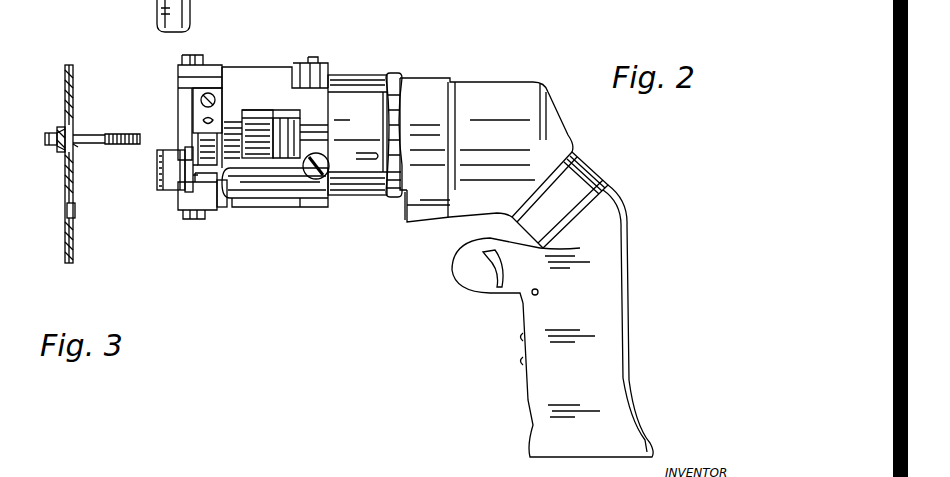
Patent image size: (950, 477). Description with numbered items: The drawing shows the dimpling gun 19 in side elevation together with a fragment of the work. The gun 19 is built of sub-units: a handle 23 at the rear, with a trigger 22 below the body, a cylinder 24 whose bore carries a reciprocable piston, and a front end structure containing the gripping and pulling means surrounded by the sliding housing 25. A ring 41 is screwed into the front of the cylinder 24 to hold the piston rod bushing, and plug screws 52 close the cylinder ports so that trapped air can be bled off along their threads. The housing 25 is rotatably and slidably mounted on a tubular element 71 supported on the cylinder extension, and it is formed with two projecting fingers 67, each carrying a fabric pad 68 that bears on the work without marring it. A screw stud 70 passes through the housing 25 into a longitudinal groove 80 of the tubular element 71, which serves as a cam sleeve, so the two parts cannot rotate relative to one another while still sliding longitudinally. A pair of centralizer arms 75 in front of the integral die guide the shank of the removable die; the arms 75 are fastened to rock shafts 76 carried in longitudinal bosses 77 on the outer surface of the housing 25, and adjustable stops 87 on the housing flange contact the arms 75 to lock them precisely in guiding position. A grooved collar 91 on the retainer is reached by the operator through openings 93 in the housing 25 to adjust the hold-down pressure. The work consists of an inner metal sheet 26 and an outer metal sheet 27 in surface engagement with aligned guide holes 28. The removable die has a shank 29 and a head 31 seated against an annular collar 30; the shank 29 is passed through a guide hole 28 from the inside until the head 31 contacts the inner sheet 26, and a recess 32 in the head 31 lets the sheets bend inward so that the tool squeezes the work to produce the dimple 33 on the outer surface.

In FIG. 2, the gun 19 is at (586, 149).
In FIG. 2, the trigger 22 is at (497, 278).
In FIG. 2, the handle 23 is at (618, 380).
In FIG. 2, the cylinder 24 is at (537, 95).
In FIG. 2, the sliding housing 25 is at (257, 76).
In FIG. 3, the inner metal sheet 26 is at (68, 263).
In FIG. 3, the outer metal sheet 27 is at (74, 255).
In FIG. 3, the guide holes 28 is at (76, 146).
In FIG. 3, the shank 29 is at (122, 134).
In FIG. 3, the annular collar 30 is at (56, 131).
In FIG. 3, the head 31 is at (60, 148).
In FIG. 3, the recess 32 is at (66, 108).
In FIG. 3, the dimple 33 is at (75, 210).
In FIG. 2, the ring 41 is at (393, 78).
In FIG. 2, the plug screws 52 is at (407, 214).
In FIG. 2, the projecting fingers 67 is at (190, 183).
In FIG. 2, the fabric pad 68 is at (172, 175).
In FIG. 2, the screw stud 70 is at (322, 174).
In FIG. 2, the tubular element 71 is at (362, 131).
In FIG. 2, the centralizer arms 75 is at (178, 100).
In FIG. 2, the rock shafts 76 is at (217, 207).
In FIG. 2, the longitudinal bosses 77 is at (270, 207).
In FIG. 2, the longitudinal groove 80 is at (362, 160).
In FIG. 2, the adjustable stops 87 is at (212, 112).
In FIG. 2, the collar 91 is at (255, 120).
In FIG. 2, the openings 93 is at (292, 112).